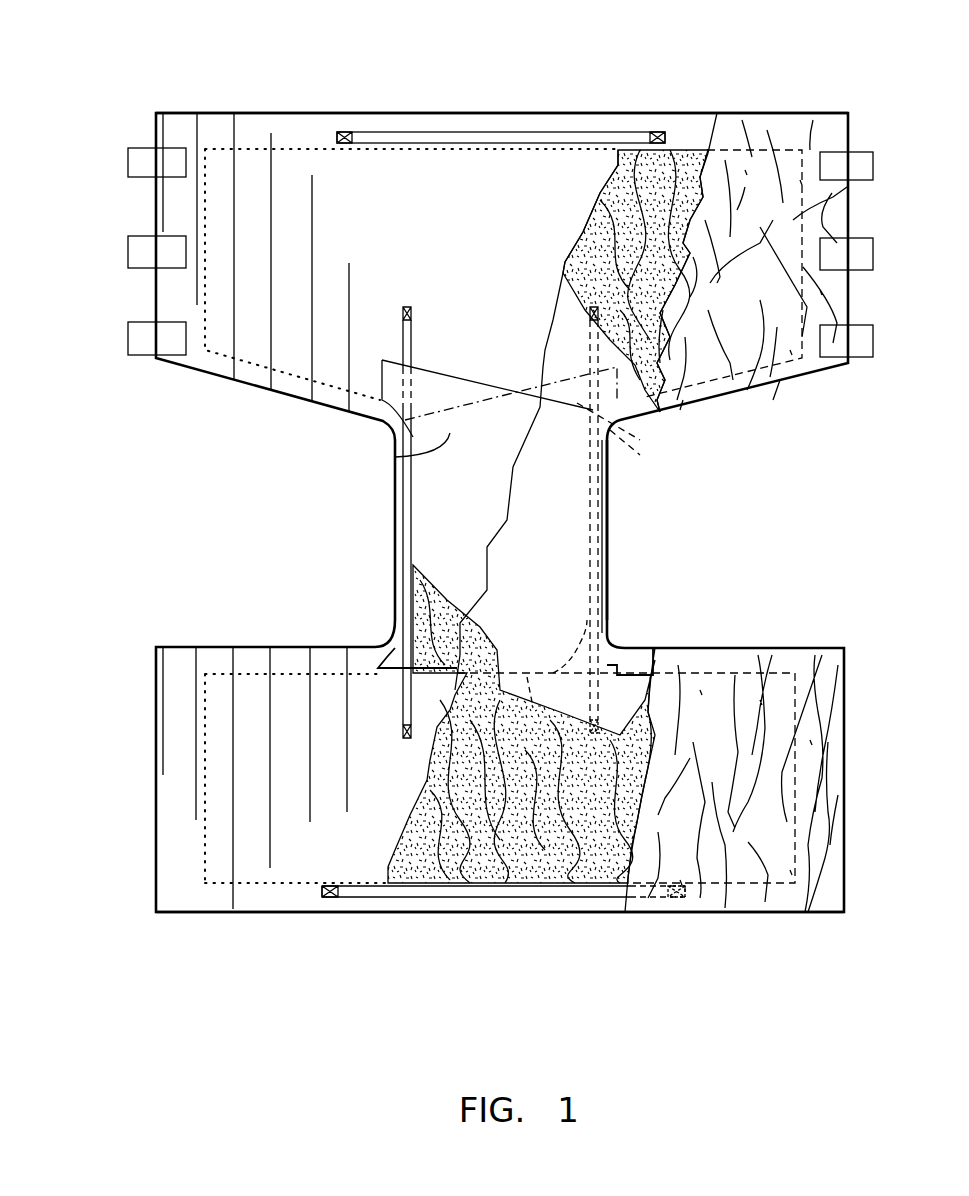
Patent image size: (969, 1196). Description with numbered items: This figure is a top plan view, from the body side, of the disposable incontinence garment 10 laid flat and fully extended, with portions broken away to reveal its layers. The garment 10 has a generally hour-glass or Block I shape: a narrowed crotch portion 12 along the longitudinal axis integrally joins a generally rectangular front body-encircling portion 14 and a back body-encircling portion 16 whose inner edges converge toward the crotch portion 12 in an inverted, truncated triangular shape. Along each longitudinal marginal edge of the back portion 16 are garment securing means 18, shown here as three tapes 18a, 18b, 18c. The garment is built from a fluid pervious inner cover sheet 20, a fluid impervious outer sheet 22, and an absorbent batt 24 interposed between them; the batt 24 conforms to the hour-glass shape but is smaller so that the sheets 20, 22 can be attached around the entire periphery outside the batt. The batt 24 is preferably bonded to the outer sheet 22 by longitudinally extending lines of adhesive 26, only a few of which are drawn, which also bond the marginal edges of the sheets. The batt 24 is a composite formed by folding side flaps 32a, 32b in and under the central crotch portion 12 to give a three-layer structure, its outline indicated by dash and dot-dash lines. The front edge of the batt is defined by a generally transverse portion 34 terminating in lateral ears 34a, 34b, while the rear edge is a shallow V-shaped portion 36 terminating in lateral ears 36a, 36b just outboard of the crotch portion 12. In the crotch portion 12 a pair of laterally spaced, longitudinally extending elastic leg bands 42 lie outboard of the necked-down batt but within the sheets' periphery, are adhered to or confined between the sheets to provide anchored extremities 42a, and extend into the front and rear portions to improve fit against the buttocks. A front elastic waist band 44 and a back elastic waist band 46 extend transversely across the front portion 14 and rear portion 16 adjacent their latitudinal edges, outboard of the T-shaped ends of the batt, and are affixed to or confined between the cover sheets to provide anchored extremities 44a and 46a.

The disposable garment 10 is at (285, 452).
The crotch portion 12 is at (608, 533).
The front body-encircling portion 14 is at (205, 913).
The back body-encircling portion 16 is at (697, 108).
The garment securing means 18 is at (135, 233).
The garment securing means 18a is at (140, 155).
The garment securing means 18b is at (140, 253).
The garment securing means 18c is at (145, 350).
The inner cover sheet 20 is at (773, 380).
The outer sheet 22 is at (235, 383).
The absorbent batt 24 is at (608, 240).
The lines of adhesive 26 is at (348, 285).
The side flap 32a is at (395, 457).
The side flap 32b is at (640, 455).
The transverse portion 34 is at (521, 724).
The lateral ear 34a is at (393, 657).
The lateral ear 34b is at (613, 645).
The V-shaped portion 36 is at (495, 380).
The lateral ear 36a is at (427, 383).
The lateral ear 36b is at (630, 425).
The elastic leg bands 42 is at (405, 543).
The anchored extremities 42a is at (590, 307).
The front elastic waist band 44 is at (425, 897).
The anchored extremities 44a is at (325, 905).
The back elastic waist band 46 is at (470, 135).
The anchored extremities 46a is at (350, 132).